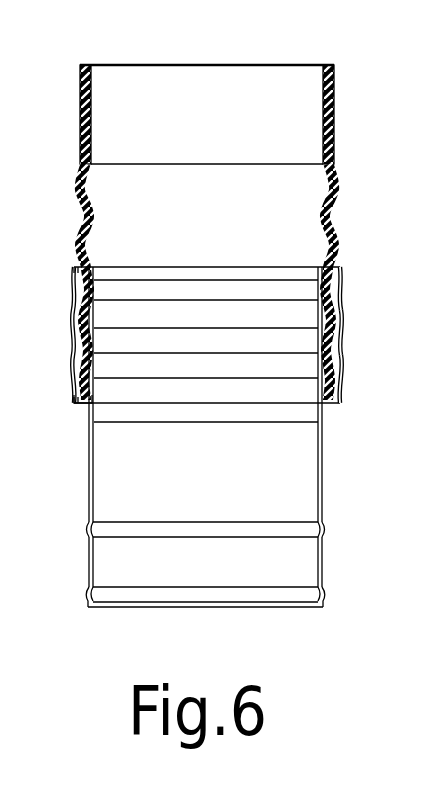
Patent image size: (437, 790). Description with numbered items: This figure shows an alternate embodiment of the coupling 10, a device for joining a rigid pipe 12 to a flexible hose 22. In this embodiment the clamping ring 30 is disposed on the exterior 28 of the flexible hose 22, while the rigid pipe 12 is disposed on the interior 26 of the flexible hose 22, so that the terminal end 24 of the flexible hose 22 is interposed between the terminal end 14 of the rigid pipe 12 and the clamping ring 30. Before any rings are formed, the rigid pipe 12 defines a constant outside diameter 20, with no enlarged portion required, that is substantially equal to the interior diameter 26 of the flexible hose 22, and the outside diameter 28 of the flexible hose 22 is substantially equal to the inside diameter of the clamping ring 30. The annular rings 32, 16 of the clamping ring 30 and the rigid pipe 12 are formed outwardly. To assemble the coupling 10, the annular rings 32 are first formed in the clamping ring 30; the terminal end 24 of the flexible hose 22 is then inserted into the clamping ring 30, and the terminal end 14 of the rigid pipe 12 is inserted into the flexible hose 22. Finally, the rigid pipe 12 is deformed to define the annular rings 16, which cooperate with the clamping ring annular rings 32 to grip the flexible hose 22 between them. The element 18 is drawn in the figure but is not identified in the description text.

The coupling 10 is at (368, 250).
The rigid pipe 12 is at (323, 466).
The terminal end of the rigid pipe 14 is at (335, 375).
The annular rings of the rigid pipe 16 is at (95, 337).
The annular ridge 18 is at (320, 328).
The constant outside diameter 20 is at (76, 358).
The flexible hose 22 is at (338, 94).
The terminal end of the flexible hose 24 is at (338, 287).
The interior of the flexible hose 26 is at (320, 313).
The exterior of the flexible hose 28 is at (338, 322).
The clamping ring 30 is at (71, 311).
The annular rings of the clamping ring 32 is at (108, 288).